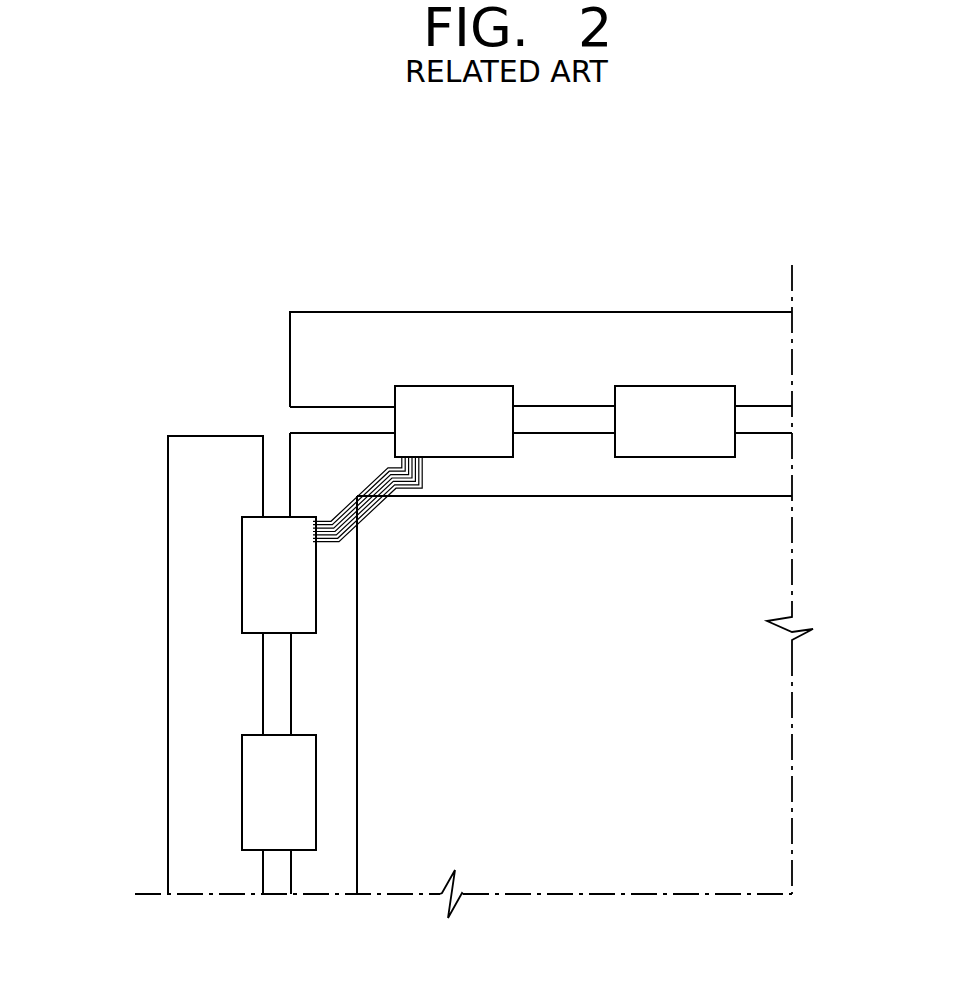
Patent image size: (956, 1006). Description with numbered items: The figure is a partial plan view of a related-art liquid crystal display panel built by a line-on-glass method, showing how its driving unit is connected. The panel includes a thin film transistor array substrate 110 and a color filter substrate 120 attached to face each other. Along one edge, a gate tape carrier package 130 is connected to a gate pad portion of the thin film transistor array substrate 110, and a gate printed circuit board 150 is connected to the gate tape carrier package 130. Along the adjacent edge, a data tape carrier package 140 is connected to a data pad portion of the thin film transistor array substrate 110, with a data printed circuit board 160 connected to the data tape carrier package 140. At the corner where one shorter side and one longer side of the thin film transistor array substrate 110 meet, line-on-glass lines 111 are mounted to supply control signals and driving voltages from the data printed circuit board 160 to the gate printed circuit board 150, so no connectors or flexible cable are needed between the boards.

The thin film transistor array substrate 110 is at (335, 867).
The line-on-glass lines 111 is at (340, 500).
The color filter substrate 120 is at (558, 865).
The gate tape carrier package 130 is at (255, 580).
The data tape carrier package 140 is at (475, 400).
The gate printed circuit board 150 is at (185, 494).
The data printed circuit board 160 is at (397, 327).